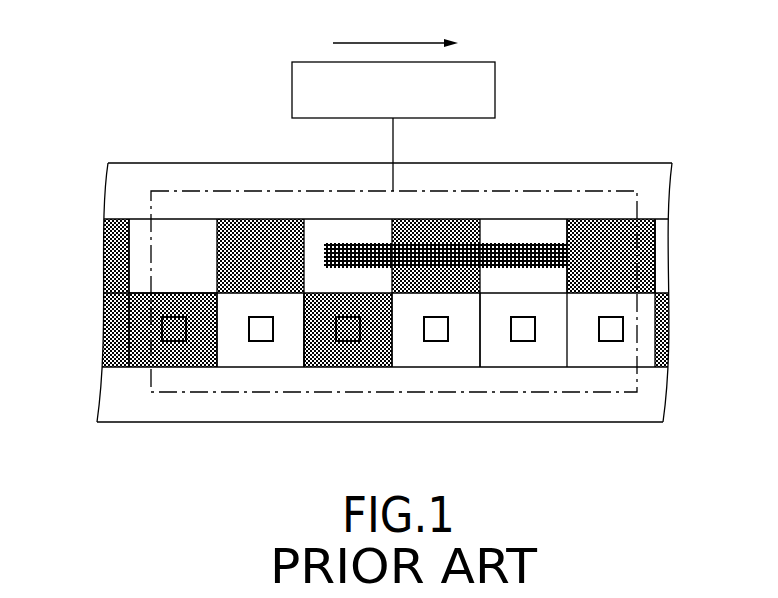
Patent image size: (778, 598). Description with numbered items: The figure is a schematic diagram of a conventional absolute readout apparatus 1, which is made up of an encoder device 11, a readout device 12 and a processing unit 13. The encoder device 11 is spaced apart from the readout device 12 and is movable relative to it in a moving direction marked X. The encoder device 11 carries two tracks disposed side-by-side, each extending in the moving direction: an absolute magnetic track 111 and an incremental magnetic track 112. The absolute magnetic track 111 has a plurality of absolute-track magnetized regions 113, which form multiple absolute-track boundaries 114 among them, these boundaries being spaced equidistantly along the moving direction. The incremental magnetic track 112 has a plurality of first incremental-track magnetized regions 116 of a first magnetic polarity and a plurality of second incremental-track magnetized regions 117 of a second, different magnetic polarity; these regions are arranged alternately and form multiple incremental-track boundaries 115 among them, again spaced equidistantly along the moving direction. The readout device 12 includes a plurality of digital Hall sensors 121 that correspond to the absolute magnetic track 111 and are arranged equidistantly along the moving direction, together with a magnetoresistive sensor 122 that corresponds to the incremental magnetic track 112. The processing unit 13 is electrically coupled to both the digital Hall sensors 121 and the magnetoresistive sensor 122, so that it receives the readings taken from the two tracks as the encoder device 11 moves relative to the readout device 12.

The absolute readout apparatus 1 is at (649, 148).
The encoder device 11 is at (216, 162).
The readout device 12 is at (597, 190).
The processing unit 13 is at (480, 75).
The absolute magnetic track 111 is at (687, 326).
The incremental magnetic track 112 is at (682, 267).
The absolute-track magnetized regions 113 is at (178, 348).
The absolute-track boundaries 114 is at (303, 347).
The incremental-track boundaries 115 is at (303, 238).
The first incremental-track magnetized regions 116 is at (115, 266).
The second incremental-track magnetized regions 117 is at (138, 277).
The digital Hall sensors 121 is at (515, 347).
The magnetoresistive sensor 122 is at (502, 241).